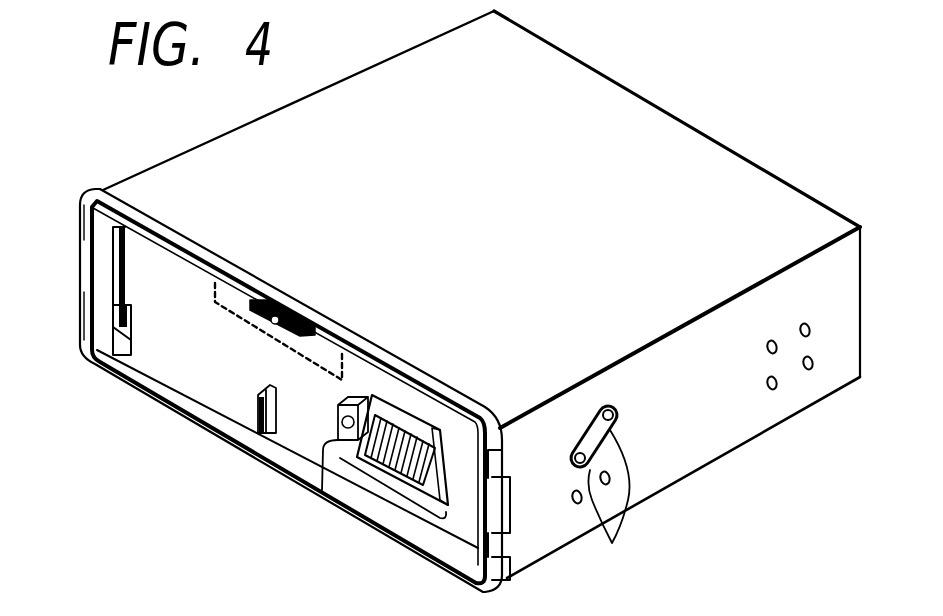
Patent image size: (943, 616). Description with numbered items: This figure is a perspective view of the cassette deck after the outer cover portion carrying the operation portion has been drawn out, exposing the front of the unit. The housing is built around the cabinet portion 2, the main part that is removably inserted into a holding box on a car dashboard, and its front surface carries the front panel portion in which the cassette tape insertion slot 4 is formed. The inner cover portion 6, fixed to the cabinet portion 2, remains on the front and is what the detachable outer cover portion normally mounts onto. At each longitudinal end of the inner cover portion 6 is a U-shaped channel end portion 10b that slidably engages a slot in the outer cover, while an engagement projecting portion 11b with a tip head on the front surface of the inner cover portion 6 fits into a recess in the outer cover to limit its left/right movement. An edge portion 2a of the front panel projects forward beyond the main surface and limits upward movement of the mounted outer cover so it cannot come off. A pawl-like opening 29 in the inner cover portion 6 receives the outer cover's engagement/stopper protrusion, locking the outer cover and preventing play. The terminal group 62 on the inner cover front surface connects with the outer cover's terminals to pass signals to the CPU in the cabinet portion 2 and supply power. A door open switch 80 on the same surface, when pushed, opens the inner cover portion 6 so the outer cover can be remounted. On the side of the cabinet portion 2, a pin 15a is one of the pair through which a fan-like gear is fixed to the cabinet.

The cabinet portion 2 is at (667, 128).
The edge portion 2a is at (385, 357).
The cassette tape insertion slot 4 is at (321, 352).
The inner cover portion 6 is at (198, 368).
The U-shaped channel end portion 10b is at (117, 263).
The engagement projecting portion 11b is at (258, 417).
The pins 15a is at (610, 495).
The pawl-like opening 29 is at (275, 305).
The terminal group 62 is at (388, 500).
The door open switch 80 is at (322, 488).